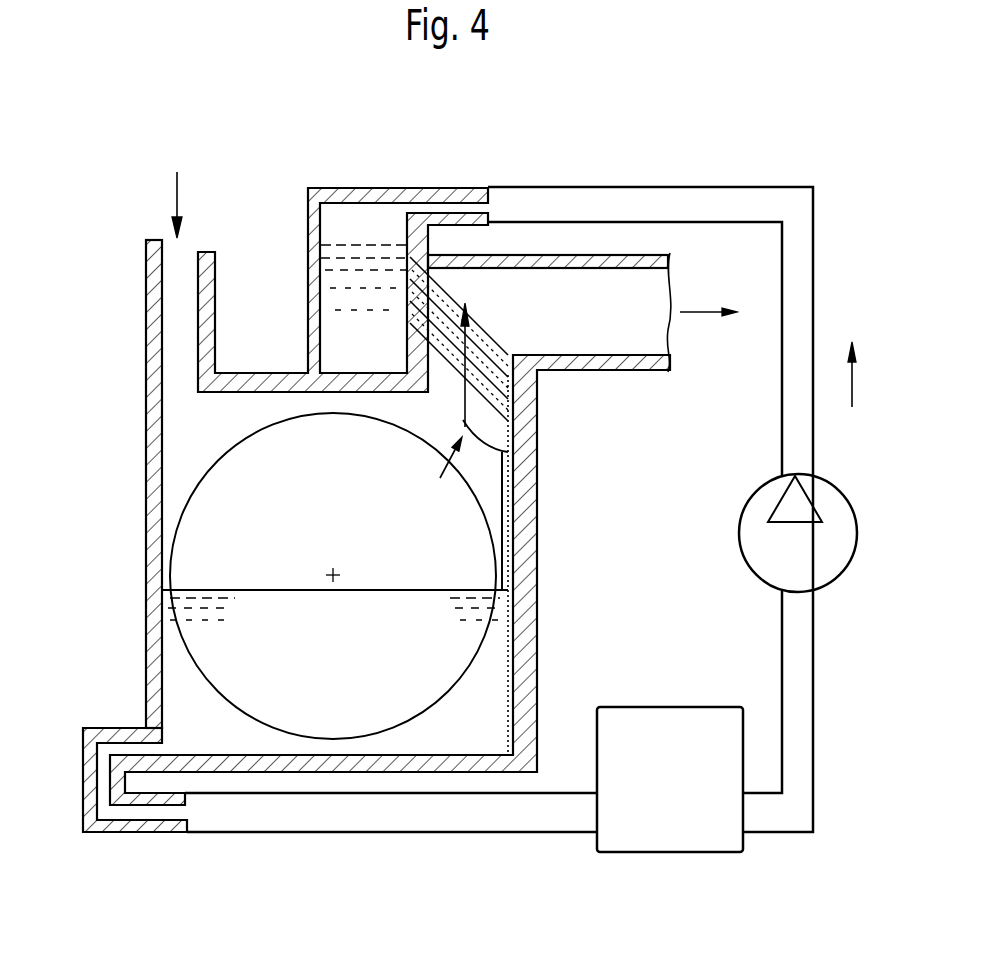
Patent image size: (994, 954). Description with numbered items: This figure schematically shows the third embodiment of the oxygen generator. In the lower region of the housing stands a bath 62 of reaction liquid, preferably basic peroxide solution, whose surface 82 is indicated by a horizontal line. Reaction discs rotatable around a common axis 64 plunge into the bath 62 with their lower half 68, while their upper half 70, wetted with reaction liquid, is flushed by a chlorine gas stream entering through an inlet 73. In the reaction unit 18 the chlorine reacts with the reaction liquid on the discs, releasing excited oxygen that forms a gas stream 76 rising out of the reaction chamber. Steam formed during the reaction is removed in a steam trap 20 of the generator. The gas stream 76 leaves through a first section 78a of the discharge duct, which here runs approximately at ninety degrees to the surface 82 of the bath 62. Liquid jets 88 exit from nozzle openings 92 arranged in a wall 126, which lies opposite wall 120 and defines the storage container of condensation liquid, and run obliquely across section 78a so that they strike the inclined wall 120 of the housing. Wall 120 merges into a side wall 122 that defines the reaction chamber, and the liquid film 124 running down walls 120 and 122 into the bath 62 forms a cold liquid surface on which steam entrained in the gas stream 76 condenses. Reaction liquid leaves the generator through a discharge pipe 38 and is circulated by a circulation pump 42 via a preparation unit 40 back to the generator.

The steam trap 20 is at (535, 293).
The wall 126 is at (407, 267).
The inlet 73 is at (172, 337).
The upper half of reaction discs 70 is at (305, 430).
The nozzle openings 92 is at (407, 283).
The liquid jets 88 is at (496, 373).
The reaction unit 18 is at (195, 418).
The first section of discharge duct 78a is at (493, 415).
The wall of housing 120 is at (528, 485).
The side wall 122 is at (517, 523).
The liquid film 124 is at (508, 563).
The common axis 64 is at (333, 575).
The gas stream 76 is at (392, 513).
The surface of the bath 82 is at (190, 590).
The bath of reaction liquid 62 is at (177, 658).
The circulation pump 42 is at (840, 533).
The discharge pipe 38 is at (103, 777).
The preparation unit 40 is at (683, 789).
The lower half of reaction discs 68 is at (305, 717).